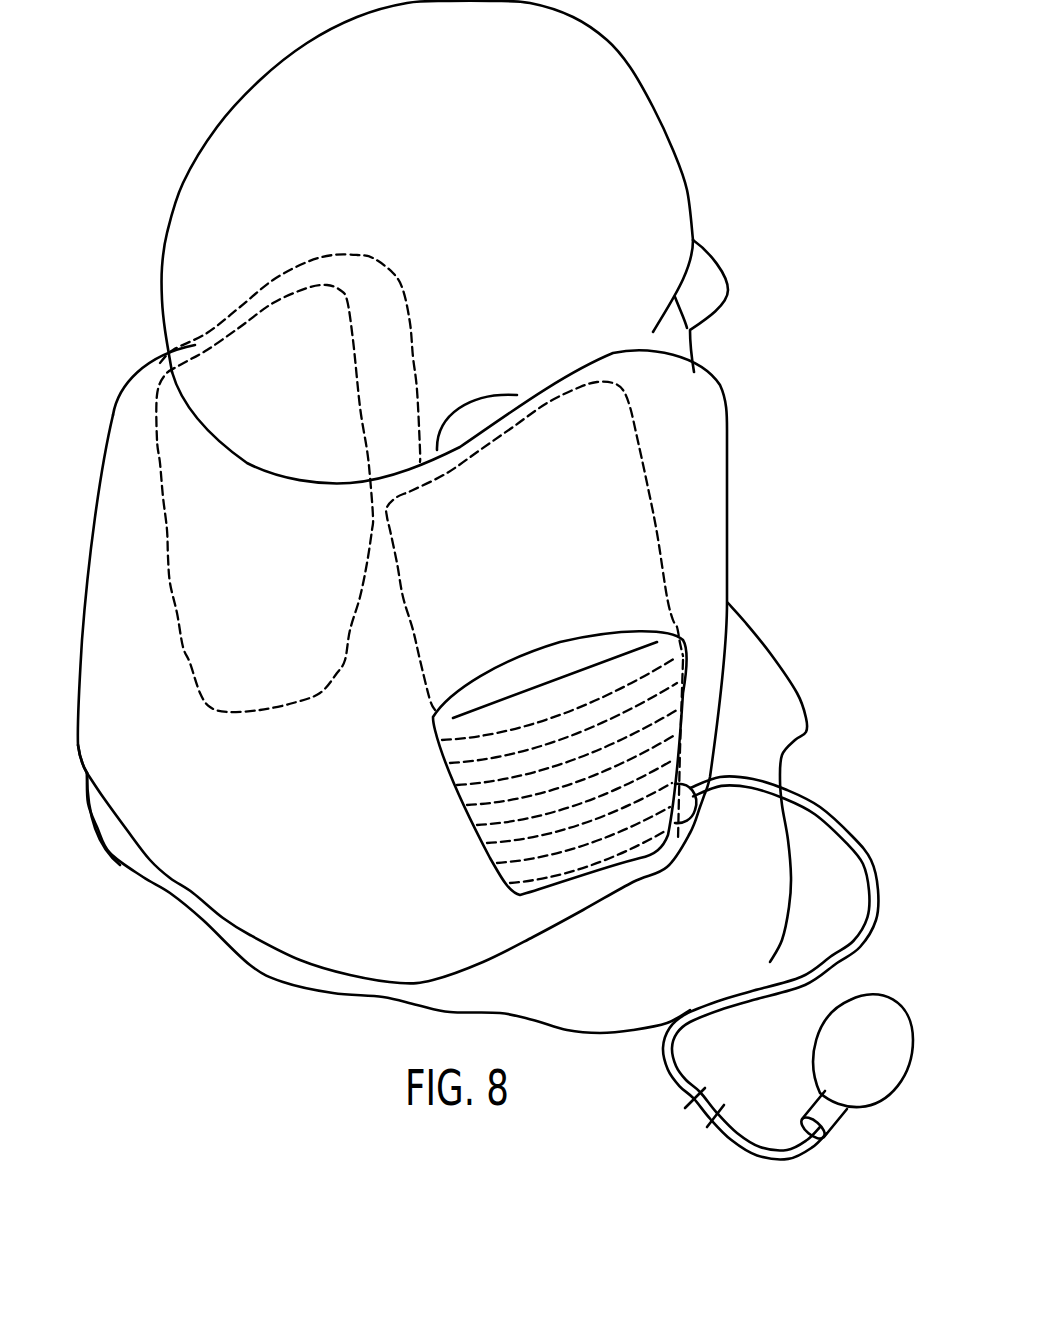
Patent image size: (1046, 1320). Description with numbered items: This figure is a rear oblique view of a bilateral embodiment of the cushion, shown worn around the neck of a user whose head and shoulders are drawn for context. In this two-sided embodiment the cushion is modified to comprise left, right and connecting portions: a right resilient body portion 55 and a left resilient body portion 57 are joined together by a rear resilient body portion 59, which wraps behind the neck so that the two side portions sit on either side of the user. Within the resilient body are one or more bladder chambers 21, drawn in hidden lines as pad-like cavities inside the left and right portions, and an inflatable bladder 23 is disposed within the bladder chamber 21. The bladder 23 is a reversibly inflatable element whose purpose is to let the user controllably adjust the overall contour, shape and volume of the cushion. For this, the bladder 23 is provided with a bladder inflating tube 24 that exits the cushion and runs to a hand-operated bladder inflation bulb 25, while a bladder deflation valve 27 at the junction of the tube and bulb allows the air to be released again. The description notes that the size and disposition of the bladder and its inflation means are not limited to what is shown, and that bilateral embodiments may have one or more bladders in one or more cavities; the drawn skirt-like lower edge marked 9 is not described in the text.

The skirt / bib 9 is at (172, 883).
The bladder chamber 21 is at (183, 445).
The inflatable bladder 23 is at (527, 807).
The bladder inflating tube 24 is at (868, 860).
The bladder inflation bulb 25 is at (870, 1072).
The bladder deflation valve 27 is at (830, 1117).
The right resilient body portion 55 is at (708, 668).
The left resilient body portion 57 is at (108, 531).
The rear resilient body portion 59 is at (180, 777).